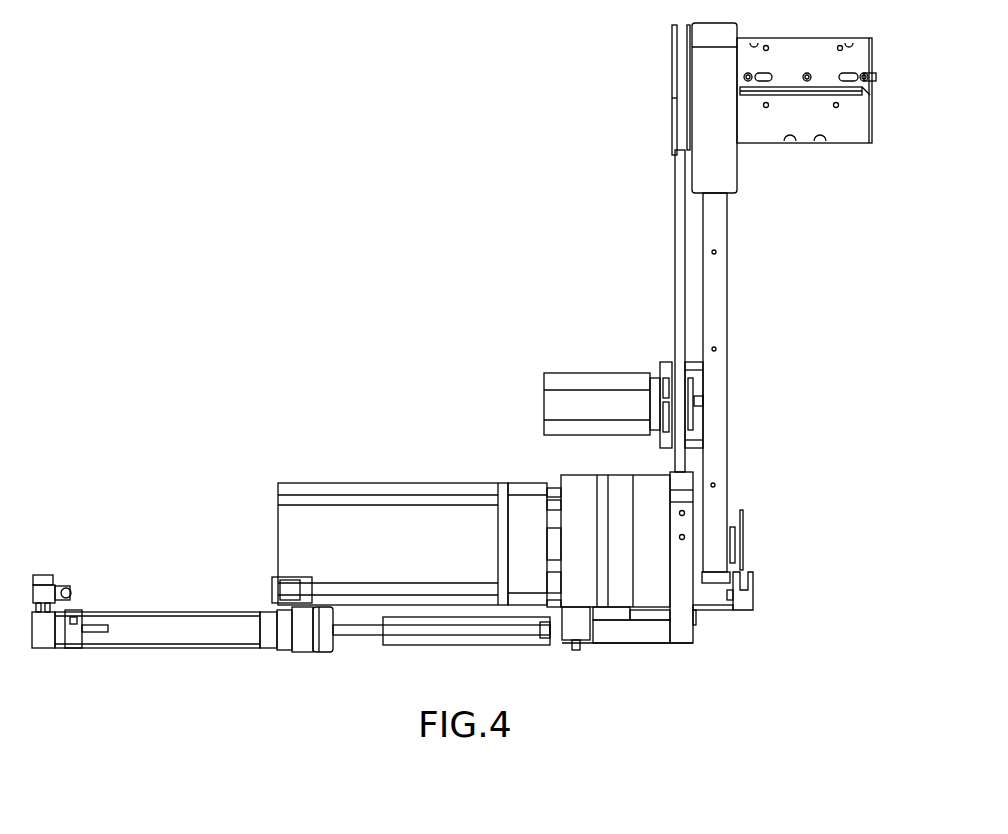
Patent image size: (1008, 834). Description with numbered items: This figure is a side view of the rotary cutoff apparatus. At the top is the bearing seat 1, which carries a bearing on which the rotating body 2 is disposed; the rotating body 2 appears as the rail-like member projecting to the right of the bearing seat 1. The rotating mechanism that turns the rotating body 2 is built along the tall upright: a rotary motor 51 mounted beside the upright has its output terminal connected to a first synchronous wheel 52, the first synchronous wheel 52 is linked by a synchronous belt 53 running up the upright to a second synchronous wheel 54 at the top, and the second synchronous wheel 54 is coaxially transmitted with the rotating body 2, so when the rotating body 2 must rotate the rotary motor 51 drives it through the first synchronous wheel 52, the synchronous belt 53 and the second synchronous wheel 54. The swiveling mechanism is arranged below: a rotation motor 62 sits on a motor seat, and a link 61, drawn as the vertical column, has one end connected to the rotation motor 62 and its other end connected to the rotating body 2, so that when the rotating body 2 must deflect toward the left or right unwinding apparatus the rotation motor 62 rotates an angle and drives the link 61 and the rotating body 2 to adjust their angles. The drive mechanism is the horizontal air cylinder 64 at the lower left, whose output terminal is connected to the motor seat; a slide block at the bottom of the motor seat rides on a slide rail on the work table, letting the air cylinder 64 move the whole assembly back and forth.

The bearing seat 1 is at (728, 172).
The rotating body 2 is at (868, 136).
The rotary motor 51 is at (544, 400).
The first synchronous wheel 52 is at (665, 372).
The synchronous belt 53 is at (675, 248).
The second synchronous wheel 54 is at (672, 98).
The link 61 is at (727, 458).
The rotation motor 62 is at (431, 516).
The air cylinder 64 is at (185, 625).